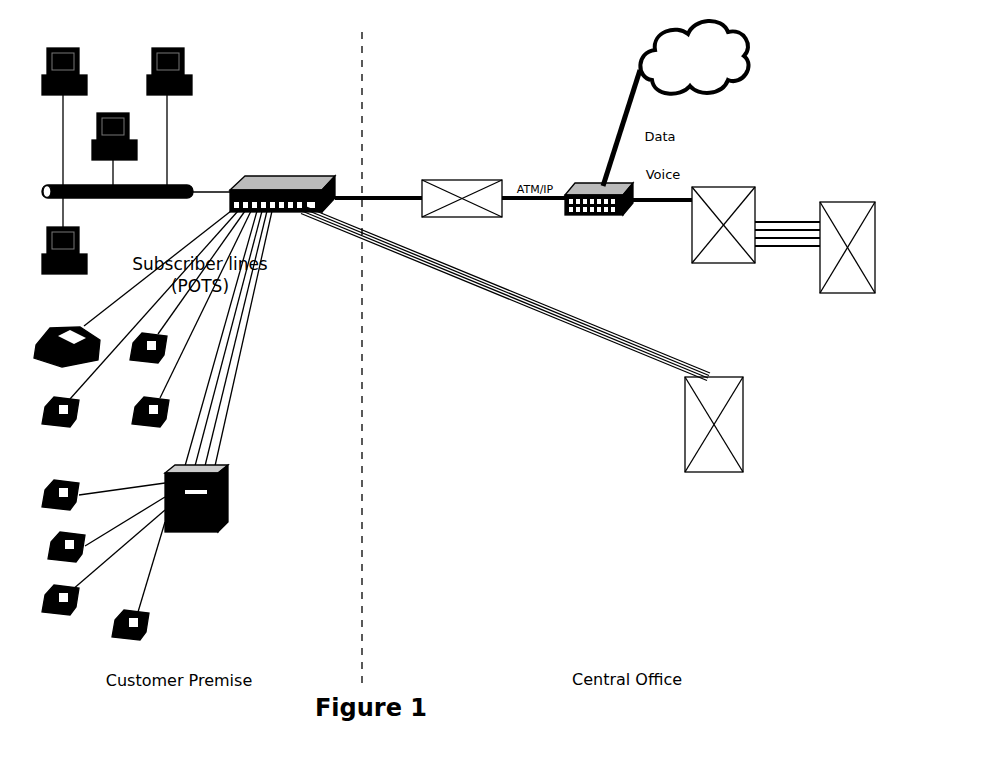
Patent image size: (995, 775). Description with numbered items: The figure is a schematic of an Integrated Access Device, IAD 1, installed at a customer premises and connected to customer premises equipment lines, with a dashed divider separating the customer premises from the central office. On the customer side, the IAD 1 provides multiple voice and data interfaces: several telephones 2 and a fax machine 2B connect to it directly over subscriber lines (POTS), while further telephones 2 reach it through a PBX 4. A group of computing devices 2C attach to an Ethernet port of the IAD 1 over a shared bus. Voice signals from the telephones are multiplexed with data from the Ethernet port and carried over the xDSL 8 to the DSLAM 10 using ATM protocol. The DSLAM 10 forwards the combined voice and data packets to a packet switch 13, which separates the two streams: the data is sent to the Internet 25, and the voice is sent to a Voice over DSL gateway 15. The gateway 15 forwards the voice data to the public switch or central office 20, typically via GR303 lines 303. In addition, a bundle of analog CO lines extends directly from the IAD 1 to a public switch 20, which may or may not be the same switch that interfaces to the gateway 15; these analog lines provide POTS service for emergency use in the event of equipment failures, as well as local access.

The Integrated Access Device (IAD) 1 is at (282, 168).
The telephone 2 is at (103, 495).
The fax machine 2B is at (67, 355).
The computing device 2C is at (125, 168).
The PBX 4 is at (196, 505).
The xDSL 8 is at (378, 207).
The DSLAM 10 is at (462, 205).
The packet switch 13 is at (598, 207).
The Voice over DSL gateway 15 is at (723, 249).
The Public switch (Central Office) 20 is at (594, 363).
The Internet 25 is at (676, 103).
The GR303 lines 303 is at (787, 245).